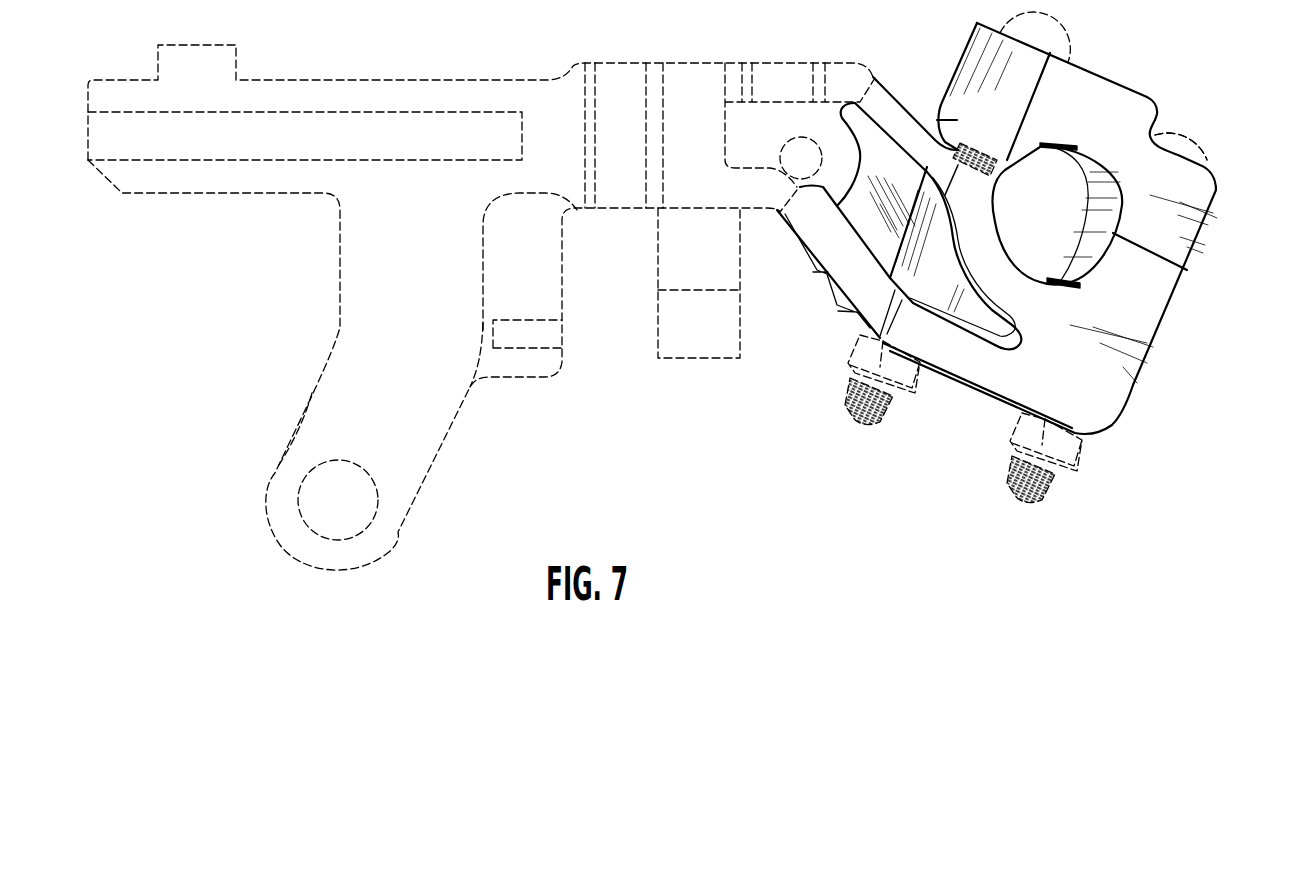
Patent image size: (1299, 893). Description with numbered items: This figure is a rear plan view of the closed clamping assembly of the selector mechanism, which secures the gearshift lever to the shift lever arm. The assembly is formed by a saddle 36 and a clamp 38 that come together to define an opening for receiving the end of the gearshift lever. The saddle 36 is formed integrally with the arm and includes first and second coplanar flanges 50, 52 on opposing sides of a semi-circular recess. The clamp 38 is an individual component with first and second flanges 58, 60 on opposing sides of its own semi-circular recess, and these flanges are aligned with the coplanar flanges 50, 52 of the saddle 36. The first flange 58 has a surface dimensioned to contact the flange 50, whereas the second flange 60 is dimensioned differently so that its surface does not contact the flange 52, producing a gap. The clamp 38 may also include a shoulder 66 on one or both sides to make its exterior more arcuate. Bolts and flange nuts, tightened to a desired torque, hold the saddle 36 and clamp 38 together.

The saddle 36 is at (1055, 223).
The clamp 38 is at (1122, 97).
The first coplanar flange 50 is at (1121, 302).
The second coplanar flange 52 is at (959, 214).
The first flange 58 is at (992, 101).
The second flange 60 is at (1139, 236).
The shoulder 66 is at (1200, 175).